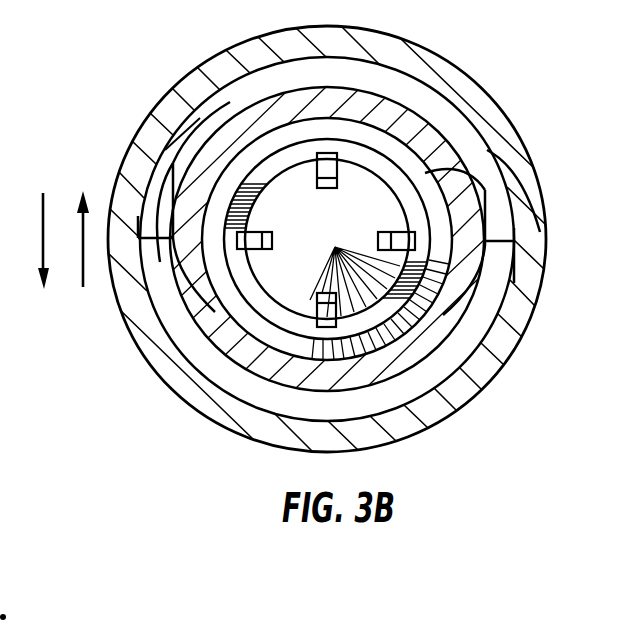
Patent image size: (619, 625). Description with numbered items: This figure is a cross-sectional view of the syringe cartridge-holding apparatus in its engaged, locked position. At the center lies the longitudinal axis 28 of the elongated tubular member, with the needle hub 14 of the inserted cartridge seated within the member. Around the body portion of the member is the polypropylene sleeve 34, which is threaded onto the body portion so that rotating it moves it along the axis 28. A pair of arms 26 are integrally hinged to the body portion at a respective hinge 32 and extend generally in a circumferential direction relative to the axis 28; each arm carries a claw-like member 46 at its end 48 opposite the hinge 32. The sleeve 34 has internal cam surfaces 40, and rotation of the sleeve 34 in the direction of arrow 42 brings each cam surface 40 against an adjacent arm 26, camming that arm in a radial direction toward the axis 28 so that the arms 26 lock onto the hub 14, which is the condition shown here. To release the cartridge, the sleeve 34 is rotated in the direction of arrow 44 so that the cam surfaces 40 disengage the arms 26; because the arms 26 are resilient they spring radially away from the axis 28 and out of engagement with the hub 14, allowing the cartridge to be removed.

The hub 14 is at (420, 165).
The arm 26 is at (172, 228).
The longitudinal axis 28 is at (323, 243).
The hinge 32 is at (458, 180).
The sleeve 34 is at (150, 365).
The internal cam surface 40 is at (505, 200).
The arrow 42 is at (41, 237).
The arrow 44 is at (83, 253).
The claw-like member 46 is at (185, 142).
The end 48 is at (165, 150).